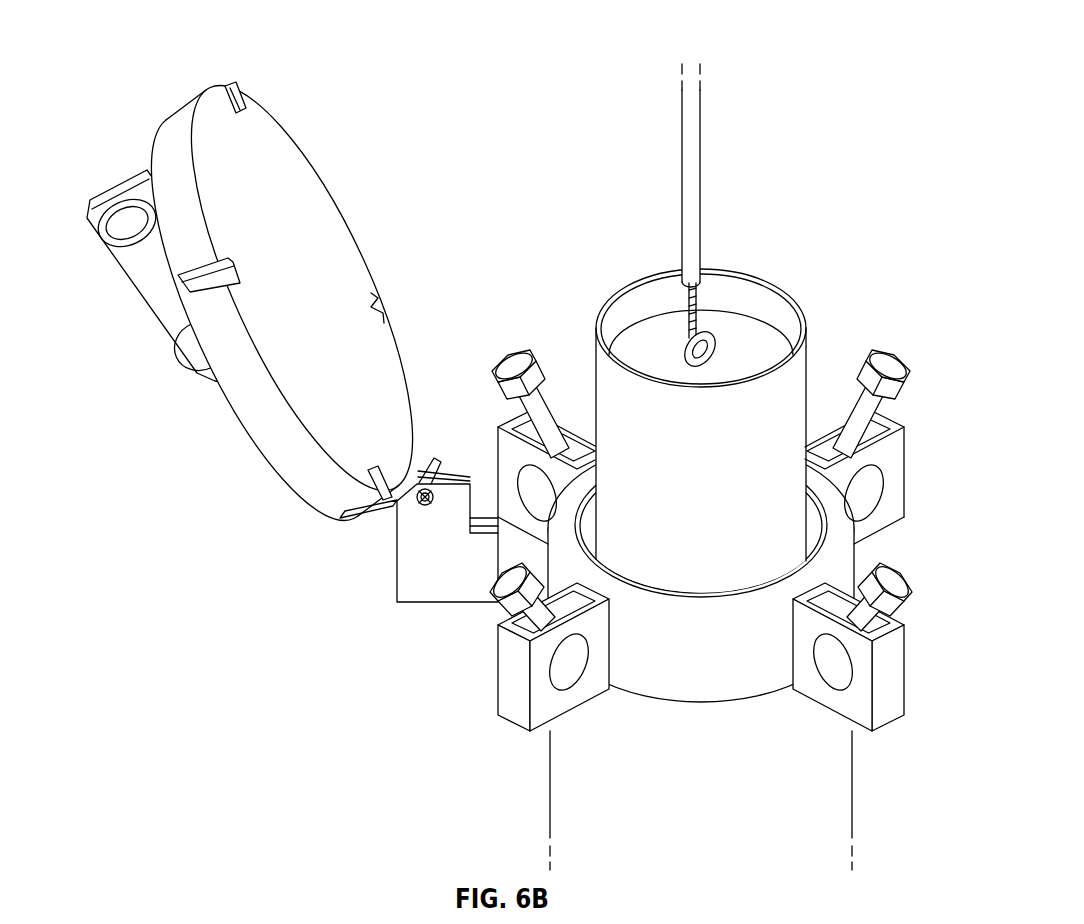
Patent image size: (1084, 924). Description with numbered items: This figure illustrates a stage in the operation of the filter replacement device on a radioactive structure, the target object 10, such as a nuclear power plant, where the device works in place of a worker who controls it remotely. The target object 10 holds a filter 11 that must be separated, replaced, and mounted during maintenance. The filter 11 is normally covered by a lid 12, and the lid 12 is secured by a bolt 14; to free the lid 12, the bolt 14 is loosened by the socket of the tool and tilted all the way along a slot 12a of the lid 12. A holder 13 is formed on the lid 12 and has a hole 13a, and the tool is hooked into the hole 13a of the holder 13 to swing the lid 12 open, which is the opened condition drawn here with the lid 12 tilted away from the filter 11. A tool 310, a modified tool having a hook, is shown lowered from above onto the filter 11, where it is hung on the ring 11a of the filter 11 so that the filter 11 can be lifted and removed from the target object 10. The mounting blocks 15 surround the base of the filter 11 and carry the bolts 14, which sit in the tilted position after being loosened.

The target object 10 is at (866, 295).
The filter 11 is at (782, 292).
The ring 11a is at (684, 344).
The lid 12 is at (320, 205).
The slot 12a is at (238, 93).
The holder 13 is at (158, 300).
The hole 13a is at (112, 238).
The bolt 14 is at (900, 350).
The fixing block 15 is at (893, 675).
The tool 310 is at (692, 164).